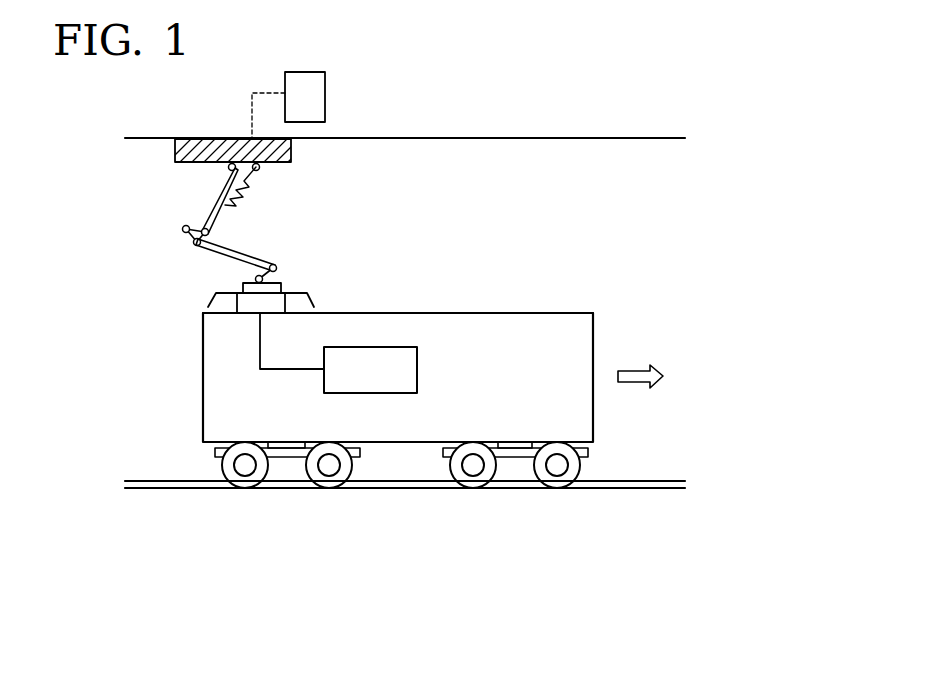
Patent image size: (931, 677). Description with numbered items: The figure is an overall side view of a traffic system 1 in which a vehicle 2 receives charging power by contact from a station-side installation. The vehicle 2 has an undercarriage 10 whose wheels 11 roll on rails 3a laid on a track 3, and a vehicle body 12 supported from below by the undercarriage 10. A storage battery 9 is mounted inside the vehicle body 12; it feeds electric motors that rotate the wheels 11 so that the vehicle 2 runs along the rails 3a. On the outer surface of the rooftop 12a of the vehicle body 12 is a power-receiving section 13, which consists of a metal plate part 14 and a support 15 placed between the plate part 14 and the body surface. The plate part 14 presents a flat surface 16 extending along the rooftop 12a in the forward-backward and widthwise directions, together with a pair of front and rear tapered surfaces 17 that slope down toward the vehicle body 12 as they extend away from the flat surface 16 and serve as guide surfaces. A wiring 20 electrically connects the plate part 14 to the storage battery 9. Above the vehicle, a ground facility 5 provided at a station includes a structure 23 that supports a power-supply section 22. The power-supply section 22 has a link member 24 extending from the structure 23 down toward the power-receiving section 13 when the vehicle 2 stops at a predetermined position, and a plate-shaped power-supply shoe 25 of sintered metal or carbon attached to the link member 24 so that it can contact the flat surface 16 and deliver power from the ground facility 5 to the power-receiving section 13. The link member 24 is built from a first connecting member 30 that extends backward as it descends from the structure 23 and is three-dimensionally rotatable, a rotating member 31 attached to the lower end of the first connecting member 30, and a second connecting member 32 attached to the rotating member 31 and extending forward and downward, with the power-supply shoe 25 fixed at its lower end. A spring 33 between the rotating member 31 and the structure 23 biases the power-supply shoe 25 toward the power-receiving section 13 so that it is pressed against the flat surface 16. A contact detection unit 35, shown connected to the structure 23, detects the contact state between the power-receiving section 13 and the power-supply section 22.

The traffic system 1 is at (701, 112).
The vehicle 2 is at (469, 394).
The track 3 is at (405, 517).
The rails 3a is at (162, 483).
The ground facility 5 is at (261, 175).
The storage battery 9 is at (390, 355).
The undercarriage 10 is at (457, 473).
The wheels 11 is at (245, 490).
The vehicle body 12 is at (451, 349).
The rooftop 12a is at (527, 312).
The power-receiving section 13 is at (220, 260).
The plate part 14 is at (282, 281).
The support 15 is at (248, 306).
The flat surface 16 is at (293, 290).
The tapered surfaces 17 is at (260, 295).
The wiring 20 is at (283, 373).
The power-supply section 22 is at (322, 197).
The structure 23 is at (281, 153).
The link member 24 is at (151, 202).
The power-supply shoe 25 is at (275, 283).
The first connecting member 30 is at (214, 250).
The rotating member 31 is at (175, 246).
The second connecting member 32 is at (215, 205).
The spring 33 is at (230, 197).
The contact detection unit 35 is at (320, 97).